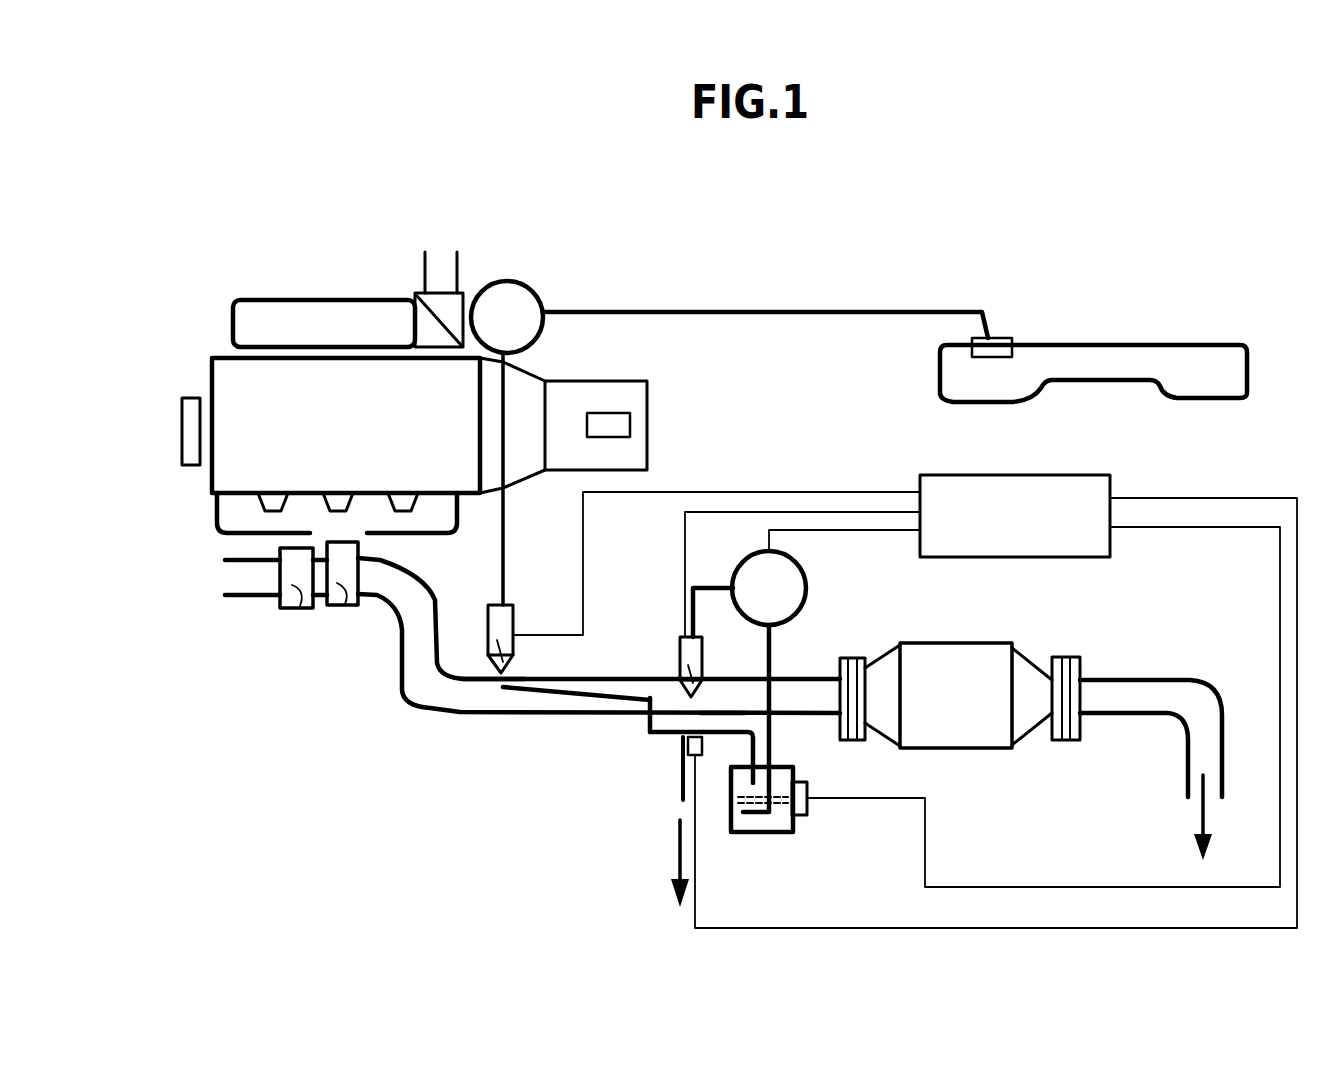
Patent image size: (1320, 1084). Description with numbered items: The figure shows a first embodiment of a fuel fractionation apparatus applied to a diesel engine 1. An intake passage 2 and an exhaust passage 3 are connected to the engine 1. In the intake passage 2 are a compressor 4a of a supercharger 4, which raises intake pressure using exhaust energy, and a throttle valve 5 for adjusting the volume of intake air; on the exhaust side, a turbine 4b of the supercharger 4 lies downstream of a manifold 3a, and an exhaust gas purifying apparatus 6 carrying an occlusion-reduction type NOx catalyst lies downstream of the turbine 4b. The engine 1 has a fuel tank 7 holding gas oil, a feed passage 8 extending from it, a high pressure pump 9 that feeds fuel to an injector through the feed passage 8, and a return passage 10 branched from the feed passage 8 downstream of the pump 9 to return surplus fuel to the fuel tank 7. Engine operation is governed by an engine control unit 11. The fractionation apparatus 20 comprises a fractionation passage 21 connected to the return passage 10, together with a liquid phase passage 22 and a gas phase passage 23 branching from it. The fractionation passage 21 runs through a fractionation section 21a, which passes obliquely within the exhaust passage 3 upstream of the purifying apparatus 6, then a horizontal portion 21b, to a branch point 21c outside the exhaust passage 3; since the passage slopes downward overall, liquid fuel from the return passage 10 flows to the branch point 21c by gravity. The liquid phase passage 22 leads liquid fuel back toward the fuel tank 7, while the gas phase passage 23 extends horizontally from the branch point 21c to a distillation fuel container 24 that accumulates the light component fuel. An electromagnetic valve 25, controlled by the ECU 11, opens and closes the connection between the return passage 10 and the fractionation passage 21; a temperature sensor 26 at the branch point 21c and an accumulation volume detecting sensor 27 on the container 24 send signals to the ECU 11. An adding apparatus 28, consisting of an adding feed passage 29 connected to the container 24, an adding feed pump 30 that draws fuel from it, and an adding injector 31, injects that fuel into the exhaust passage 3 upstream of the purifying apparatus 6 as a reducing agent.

The diesel engine 1 is at (260, 407).
The intake passage 2 is at (293, 318).
The exhaust passage 3 is at (400, 677).
The manifold 3a is at (243, 513).
The supercharger 4 is at (271, 621).
The compressor 4a is at (300, 608).
The turbine 4b is at (350, 606).
The throttle valve 5 is at (417, 297).
The exhaust gas purifying apparatus 6 is at (927, 667).
The fuel tank 7 is at (1197, 367).
The feed passage 8 is at (762, 310).
The high pressure pump 9 is at (507, 282).
The return passage 10 is at (503, 558).
The engine control unit (ECU) 11 is at (1113, 543).
The fractionation apparatus 20 is at (843, 713).
The fractionation passage 21 is at (571, 751).
The fractionation section 21a is at (567, 700).
The horizontal portion 21b is at (672, 738).
The branch point 21c is at (678, 737).
The liquid phase passage 22 is at (677, 798).
The gas phase passage 23 is at (723, 718).
The distillation fuel container 24 is at (793, 825).
The valve 25 is at (500, 679).
The temperature sensor 26 is at (703, 760).
The accumulation volume detecting sensor 27 is at (803, 781).
The adding apparatus 28 is at (761, 604).
The adding feed passage 29 is at (770, 653).
The adding feed pump 30 is at (808, 575).
The adding injector 31 is at (690, 662).